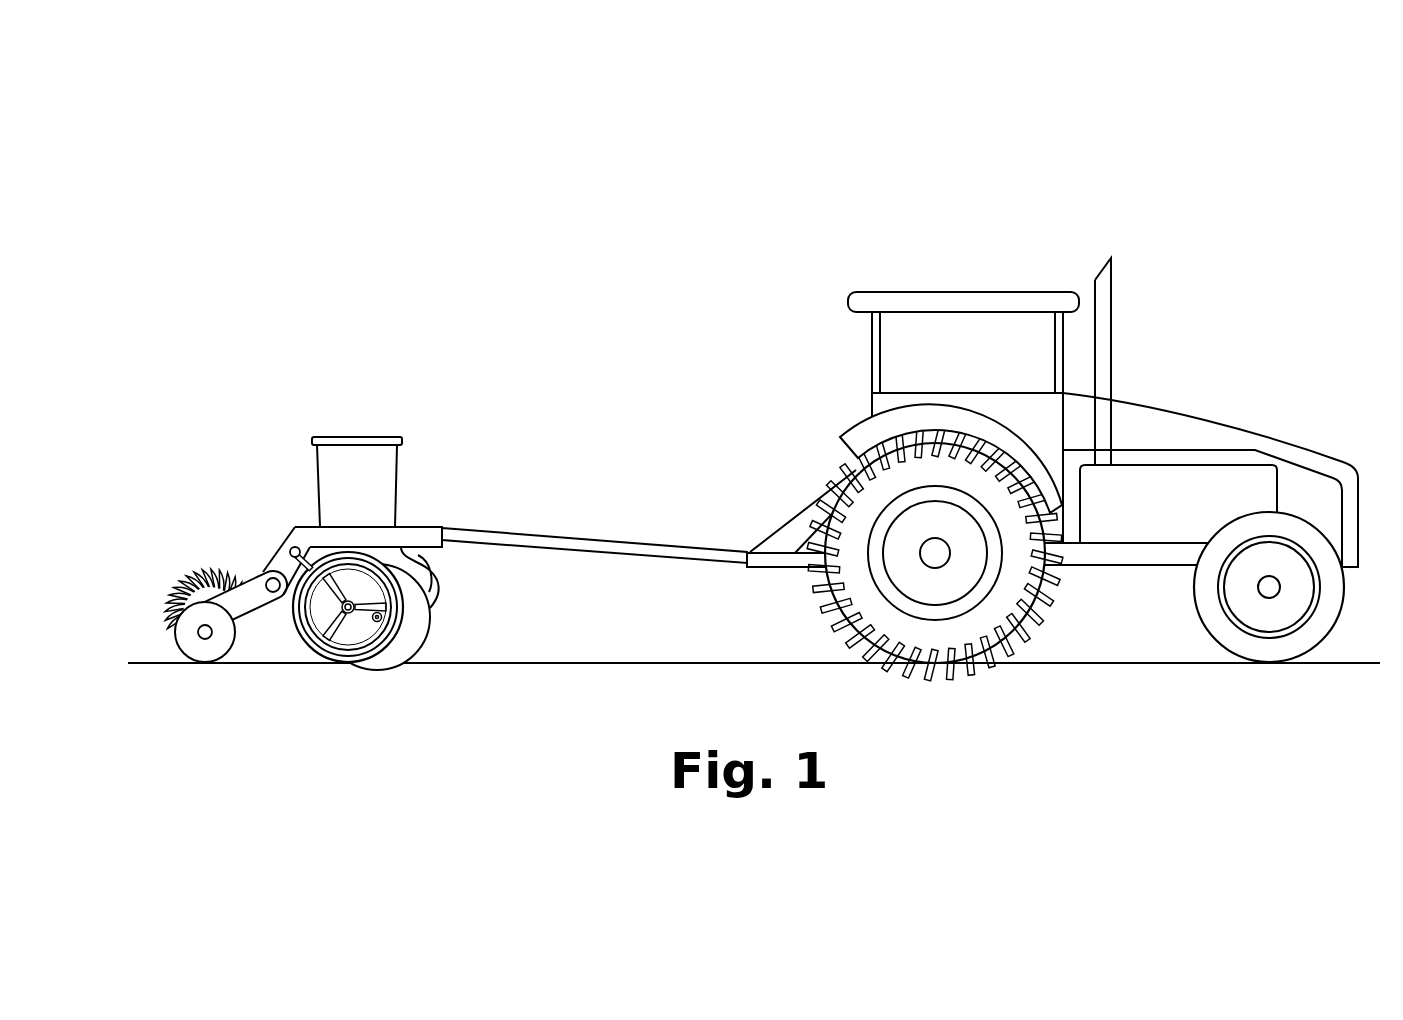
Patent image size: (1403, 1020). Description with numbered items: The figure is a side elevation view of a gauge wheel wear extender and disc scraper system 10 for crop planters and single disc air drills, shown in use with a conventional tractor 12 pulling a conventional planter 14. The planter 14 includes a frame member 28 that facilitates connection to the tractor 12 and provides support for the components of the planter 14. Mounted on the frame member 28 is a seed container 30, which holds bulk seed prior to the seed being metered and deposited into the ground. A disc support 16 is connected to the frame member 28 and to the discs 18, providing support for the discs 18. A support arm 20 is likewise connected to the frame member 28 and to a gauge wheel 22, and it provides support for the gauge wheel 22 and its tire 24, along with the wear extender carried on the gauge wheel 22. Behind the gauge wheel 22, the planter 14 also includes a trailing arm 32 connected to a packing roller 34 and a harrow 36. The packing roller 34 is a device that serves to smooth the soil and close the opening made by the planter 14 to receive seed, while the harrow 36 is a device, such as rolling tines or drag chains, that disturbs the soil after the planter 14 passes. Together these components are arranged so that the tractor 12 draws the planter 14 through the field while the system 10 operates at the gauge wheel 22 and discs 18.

The gauge wheel wear extender and disc scraper system 10 is at (322, 182).
The tractor 12 is at (925, 282).
The planter 14 is at (432, 553).
The disc support 16 is at (437, 573).
The discs 18 is at (420, 625).
The support arm 20 is at (307, 547).
The gauge wheel 22 is at (334, 654).
The tire 24 is at (332, 658).
The frame member 28 is at (507, 535).
The seed container 30 is at (320, 465).
The trailing arm 32 is at (248, 588).
The packing roller 34 is at (178, 640).
The harrow 36 is at (202, 573).